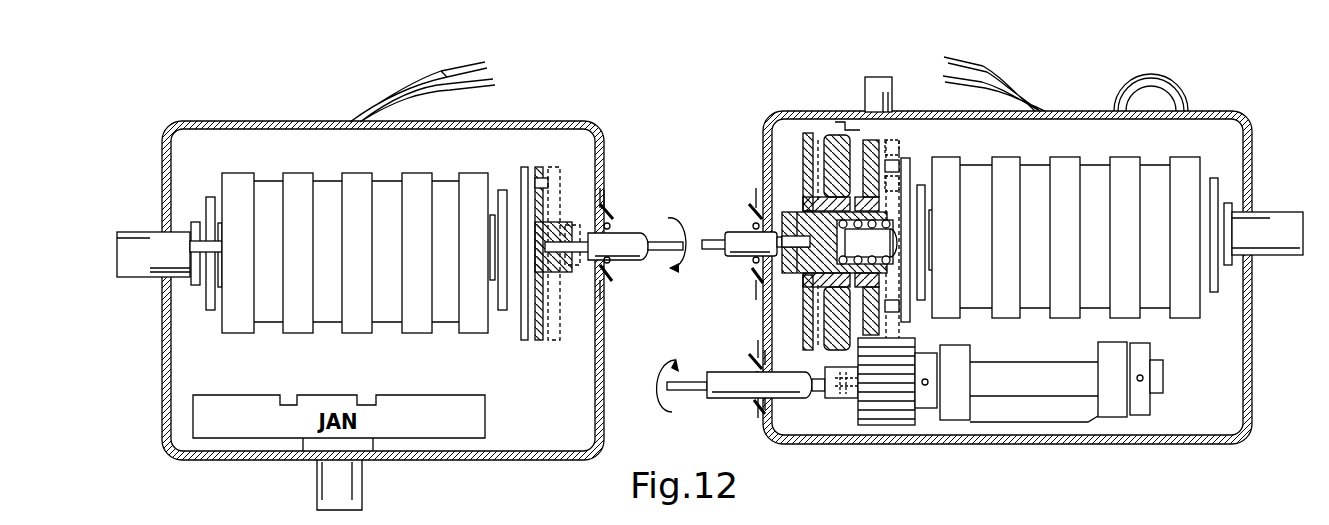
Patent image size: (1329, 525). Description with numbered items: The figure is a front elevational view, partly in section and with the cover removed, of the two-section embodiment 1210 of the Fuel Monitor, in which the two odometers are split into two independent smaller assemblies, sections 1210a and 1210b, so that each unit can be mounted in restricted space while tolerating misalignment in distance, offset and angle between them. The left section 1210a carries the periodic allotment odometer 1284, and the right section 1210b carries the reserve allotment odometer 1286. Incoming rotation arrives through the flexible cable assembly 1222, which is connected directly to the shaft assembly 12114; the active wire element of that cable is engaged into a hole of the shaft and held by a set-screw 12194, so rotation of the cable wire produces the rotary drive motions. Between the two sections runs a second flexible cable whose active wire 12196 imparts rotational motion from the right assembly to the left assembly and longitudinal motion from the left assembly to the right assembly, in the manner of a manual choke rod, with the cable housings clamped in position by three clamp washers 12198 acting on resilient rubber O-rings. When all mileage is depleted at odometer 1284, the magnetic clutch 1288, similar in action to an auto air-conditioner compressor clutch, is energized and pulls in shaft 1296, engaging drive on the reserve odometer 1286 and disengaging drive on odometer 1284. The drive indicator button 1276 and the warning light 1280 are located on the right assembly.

The embodiment 1210 is at (122, 121).
The section 1210a is at (565, 112).
The section 1210b is at (1218, 98).
The periodic allotment odometer 1284 is at (358, 178).
The clamp washers 12198 is at (610, 213).
The active wire 12196 is at (712, 240).
The shaft 1296 is at (790, 275).
The magnetic clutch 1288 is at (832, 138).
The drive indicator button 1276 is at (876, 85).
The reserve allotment odometer 1286 is at (1063, 165).
The warning light 1280 is at (1168, 82).
The flexible cable assembly 1222 is at (692, 398).
The set-screw 12194 is at (840, 398).
The shaft assembly 12114 is at (1045, 388).